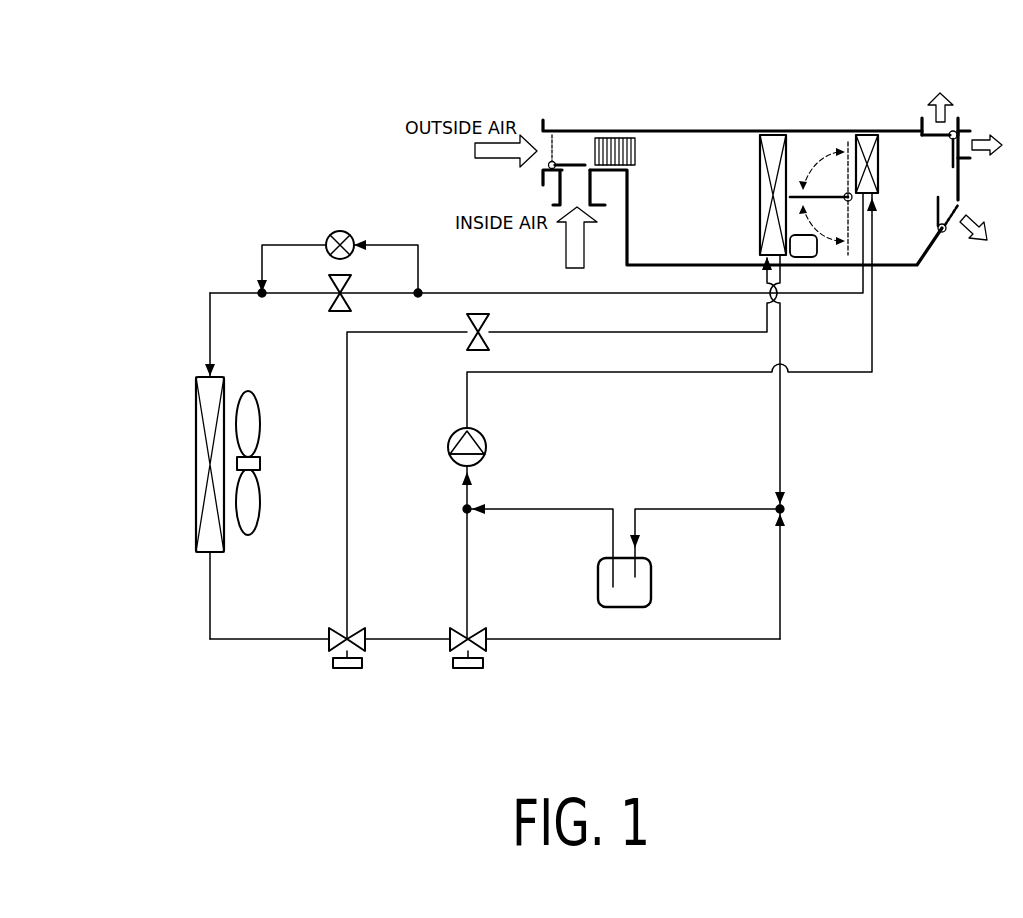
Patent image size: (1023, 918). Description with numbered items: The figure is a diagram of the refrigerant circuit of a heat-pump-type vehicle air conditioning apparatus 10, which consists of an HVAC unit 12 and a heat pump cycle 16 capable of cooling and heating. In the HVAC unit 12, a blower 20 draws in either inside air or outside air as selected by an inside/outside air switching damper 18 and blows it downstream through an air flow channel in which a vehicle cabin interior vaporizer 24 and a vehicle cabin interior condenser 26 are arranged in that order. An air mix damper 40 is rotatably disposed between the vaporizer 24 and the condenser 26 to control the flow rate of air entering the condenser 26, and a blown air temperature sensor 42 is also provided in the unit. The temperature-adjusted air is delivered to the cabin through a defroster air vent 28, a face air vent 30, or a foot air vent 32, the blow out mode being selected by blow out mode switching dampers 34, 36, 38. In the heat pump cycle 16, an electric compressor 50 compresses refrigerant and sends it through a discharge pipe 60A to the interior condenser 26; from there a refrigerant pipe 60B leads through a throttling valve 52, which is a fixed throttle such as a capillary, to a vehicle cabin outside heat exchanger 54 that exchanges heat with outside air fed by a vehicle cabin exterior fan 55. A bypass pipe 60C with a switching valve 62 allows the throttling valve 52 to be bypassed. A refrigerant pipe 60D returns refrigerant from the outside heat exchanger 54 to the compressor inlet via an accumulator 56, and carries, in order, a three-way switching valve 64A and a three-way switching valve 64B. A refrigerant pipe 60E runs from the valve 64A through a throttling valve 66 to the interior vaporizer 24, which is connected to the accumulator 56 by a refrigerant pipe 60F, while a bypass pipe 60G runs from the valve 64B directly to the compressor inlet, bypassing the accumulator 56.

The vehicle air conditioning apparatus 10 is at (503, 84).
The HVAC unit 12 is at (686, 126).
The heat pump cycle 16 is at (411, 214).
The inside/outside air switching damper 18 is at (569, 162).
The blower 20 is at (637, 150).
The vehicle cabin interior vaporizer 24 is at (760, 196).
The vehicle cabin interior condenser 26 is at (880, 160).
The defroster air vent 28 is at (955, 130).
The face air vent 30 is at (972, 135).
The foot air vent 32 is at (948, 232).
The blow out mode switching damper 34 is at (930, 133).
The blow out mode switching damper 36 is at (968, 160).
The blow out mode switching damper 38 is at (935, 207).
The air mix damper 40 is at (800, 193).
The blown air temperature sensor 42 is at (800, 268).
The electric compressor 50 is at (488, 446).
The throttling valve 52 is at (330, 305).
The vehicle cabin outside heat exchanger 54 is at (196, 448).
The vehicle cabin exterior fan 55 is at (261, 464).
The accumulator 56 is at (654, 577).
The discharge pipe 60A is at (636, 373).
The refrigerant pipe 60B is at (505, 291).
The bypass pipe 60C is at (289, 244).
The refrigerant pipe 60D is at (725, 508).
The refrigerant pipe 60E is at (348, 540).
The refrigerant pipe 60F is at (781, 420).
The bypass pipe 60G is at (468, 574).
The switching valve 62 is at (340, 230).
The three-way switching valve 64A is at (347, 669).
The three-way switching valve 64B is at (470, 669).
The throttling valve 66 is at (466, 341).